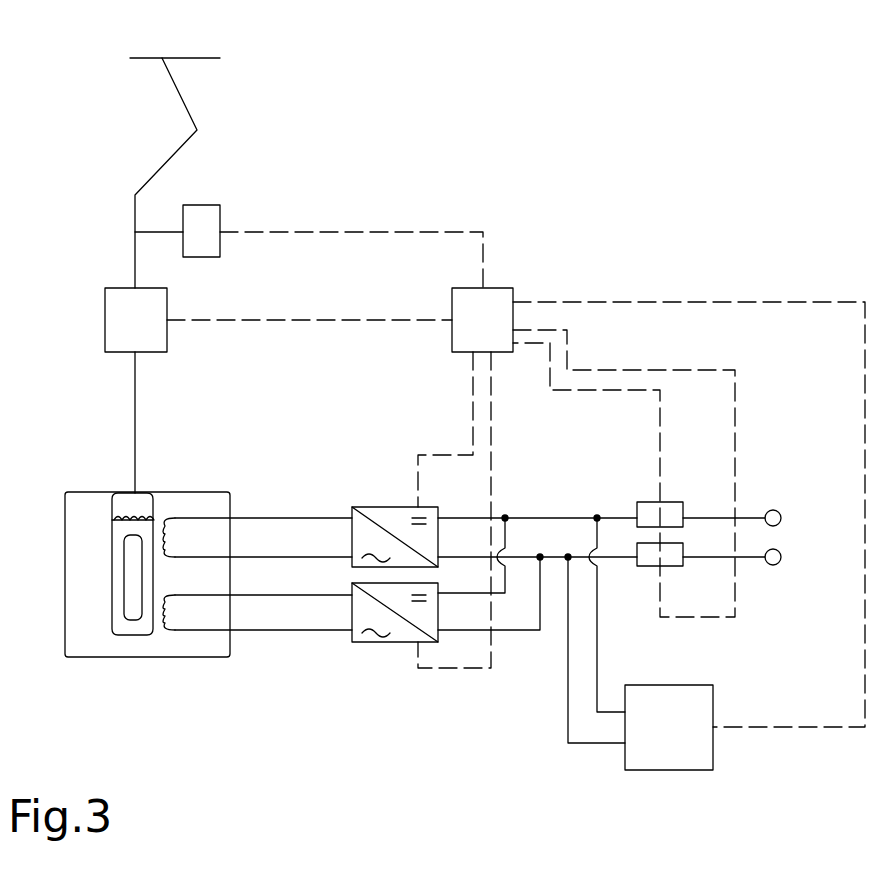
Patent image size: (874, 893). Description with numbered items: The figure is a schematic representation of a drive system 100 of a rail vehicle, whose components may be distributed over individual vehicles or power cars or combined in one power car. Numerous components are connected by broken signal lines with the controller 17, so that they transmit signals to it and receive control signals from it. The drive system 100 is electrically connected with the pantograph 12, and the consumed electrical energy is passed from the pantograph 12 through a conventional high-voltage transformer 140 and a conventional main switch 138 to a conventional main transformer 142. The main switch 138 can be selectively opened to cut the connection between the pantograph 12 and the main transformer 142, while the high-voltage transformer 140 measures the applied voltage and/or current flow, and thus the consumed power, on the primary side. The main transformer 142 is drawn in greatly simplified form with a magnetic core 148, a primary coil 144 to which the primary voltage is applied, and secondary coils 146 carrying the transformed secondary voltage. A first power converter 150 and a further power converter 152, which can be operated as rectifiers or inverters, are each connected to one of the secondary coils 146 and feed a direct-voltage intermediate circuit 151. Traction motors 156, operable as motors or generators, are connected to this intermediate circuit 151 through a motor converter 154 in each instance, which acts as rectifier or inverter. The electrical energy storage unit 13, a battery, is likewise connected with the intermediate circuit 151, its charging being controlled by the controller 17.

The drive system 100 is at (378, 152).
The pantograph 12 is at (188, 103).
The electrical energy storage unit 13 is at (662, 773).
The controller 17 is at (497, 298).
The main switch 138 is at (112, 280).
The high-voltage transformer 140 is at (207, 197).
The main transformer 142 is at (230, 492).
The primary coil 144 is at (150, 490).
The secondary coils 146 is at (193, 498).
The magnetic core 148 is at (112, 635).
The first power converter 150 is at (372, 505).
The direct-voltage intermediate circuit 151 is at (565, 495).
The further power converter 152 is at (377, 643).
The motor converter 154 is at (673, 502).
The traction motors 156 is at (780, 512).